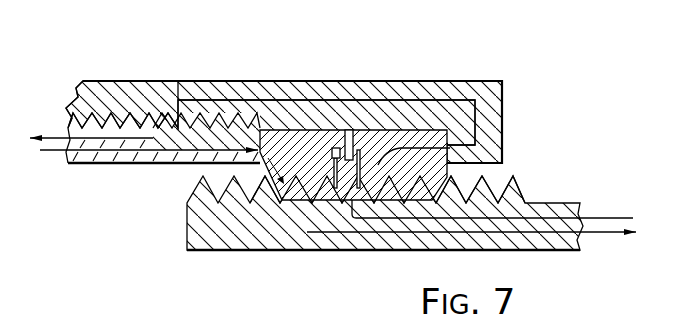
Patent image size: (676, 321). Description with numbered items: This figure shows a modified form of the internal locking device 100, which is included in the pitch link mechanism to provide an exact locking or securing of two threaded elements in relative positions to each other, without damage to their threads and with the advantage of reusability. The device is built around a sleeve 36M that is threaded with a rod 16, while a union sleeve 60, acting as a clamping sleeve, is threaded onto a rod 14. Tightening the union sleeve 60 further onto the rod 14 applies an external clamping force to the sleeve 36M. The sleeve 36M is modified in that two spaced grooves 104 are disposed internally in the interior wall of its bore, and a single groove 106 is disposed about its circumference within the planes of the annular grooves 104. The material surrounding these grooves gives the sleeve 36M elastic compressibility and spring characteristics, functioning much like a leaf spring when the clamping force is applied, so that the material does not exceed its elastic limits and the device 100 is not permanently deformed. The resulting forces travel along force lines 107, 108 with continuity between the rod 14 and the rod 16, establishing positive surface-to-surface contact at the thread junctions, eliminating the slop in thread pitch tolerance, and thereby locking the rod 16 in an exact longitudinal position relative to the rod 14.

The internal locking device 100 is at (522, 77).
The union sleeve 60 is at (133, 80).
The force line 108 is at (337, 98).
The force line 107 is at (155, 165).
The rod 14 is at (112, 166).
The rod 16 is at (371, 252).
The spaced grooves 104 is at (362, 148).
The single groove 106 is at (345, 130).
The sleeve 36M is at (447, 168).